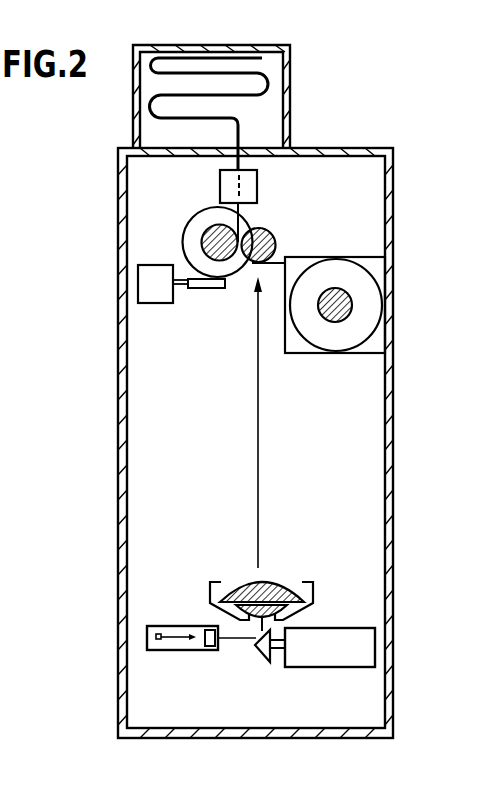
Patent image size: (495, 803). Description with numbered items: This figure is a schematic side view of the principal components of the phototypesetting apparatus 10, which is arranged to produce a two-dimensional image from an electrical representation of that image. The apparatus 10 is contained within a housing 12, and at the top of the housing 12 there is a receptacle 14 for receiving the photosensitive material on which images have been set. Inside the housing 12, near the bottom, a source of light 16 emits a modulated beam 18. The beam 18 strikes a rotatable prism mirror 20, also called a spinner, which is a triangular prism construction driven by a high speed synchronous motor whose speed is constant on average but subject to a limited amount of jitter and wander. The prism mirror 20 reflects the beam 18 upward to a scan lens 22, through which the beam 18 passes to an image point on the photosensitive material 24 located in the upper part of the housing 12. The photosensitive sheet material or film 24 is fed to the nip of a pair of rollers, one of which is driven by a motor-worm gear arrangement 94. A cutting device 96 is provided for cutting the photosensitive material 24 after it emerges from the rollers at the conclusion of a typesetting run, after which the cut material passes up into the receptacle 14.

The phototypesetting apparatus 10 is at (322, 473).
The housing 12 is at (394, 403).
The receptacle 14 is at (291, 83).
The source of light 16 is at (176, 658).
The modulated beam 18 is at (238, 652).
The rotatable prism mirror 20 is at (263, 665).
The scan lens 22 is at (320, 588).
The photosensitive material 24 is at (282, 257).
The motor-worm gear arrangement 94 is at (220, 302).
The cutting device 96 is at (258, 190).